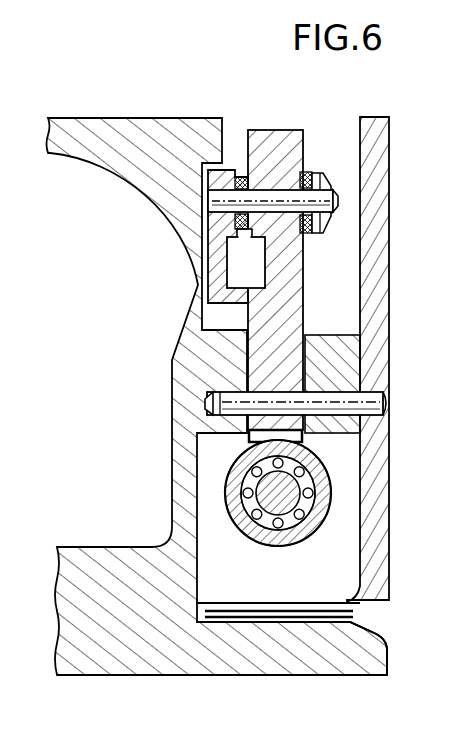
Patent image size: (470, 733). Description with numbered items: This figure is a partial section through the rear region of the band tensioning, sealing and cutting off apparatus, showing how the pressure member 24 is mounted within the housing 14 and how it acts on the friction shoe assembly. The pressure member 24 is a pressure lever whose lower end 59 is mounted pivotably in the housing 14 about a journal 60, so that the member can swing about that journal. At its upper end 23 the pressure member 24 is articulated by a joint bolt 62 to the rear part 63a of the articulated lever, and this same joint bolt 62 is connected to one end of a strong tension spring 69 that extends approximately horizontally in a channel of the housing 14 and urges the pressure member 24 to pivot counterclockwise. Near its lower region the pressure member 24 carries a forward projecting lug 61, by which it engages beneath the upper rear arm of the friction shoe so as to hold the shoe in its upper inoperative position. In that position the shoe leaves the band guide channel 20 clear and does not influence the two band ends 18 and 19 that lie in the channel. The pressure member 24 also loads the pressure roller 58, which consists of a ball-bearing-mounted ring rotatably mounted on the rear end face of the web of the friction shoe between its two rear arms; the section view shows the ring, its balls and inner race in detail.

The housing 14 is at (147, 125).
The rear part of articulated lever 63a is at (242, 177).
The upper end of pressure member 23 is at (283, 146).
The tension spring 69 is at (304, 172).
The joint bolt 62 is at (306, 201).
The forward projecting lug 61 is at (284, 236).
The pressure member 24 is at (284, 314).
The journal 60 is at (390, 397).
The lower end of pressure member 59 is at (303, 437).
The pressure roller 58 is at (335, 498).
The band end 18 is at (348, 602).
The band end 19 is at (368, 637).
The band guide channel 20 is at (227, 623).